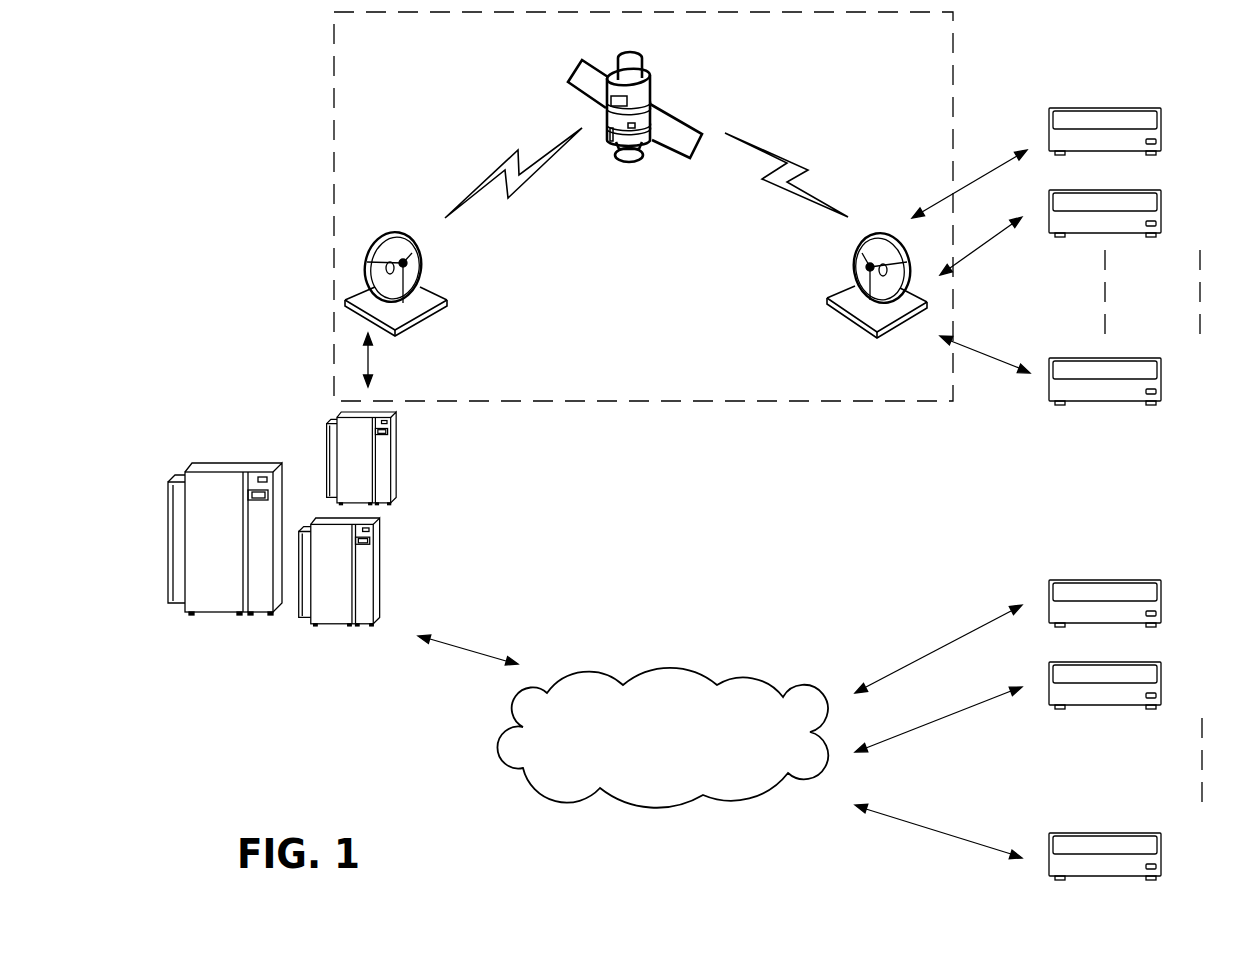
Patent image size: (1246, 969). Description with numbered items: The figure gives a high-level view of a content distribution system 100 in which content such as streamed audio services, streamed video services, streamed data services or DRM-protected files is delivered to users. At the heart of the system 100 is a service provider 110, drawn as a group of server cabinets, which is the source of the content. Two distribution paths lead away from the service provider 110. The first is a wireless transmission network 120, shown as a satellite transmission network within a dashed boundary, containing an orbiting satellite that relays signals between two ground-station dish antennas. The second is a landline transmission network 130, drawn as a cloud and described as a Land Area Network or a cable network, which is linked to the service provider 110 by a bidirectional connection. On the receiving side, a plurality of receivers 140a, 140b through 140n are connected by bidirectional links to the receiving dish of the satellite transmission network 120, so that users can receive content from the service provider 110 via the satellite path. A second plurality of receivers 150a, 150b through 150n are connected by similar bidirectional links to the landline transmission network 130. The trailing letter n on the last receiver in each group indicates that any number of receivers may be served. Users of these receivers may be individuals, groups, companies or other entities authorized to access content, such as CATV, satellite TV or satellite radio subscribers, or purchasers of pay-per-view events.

The content distribution system 100 is at (700, 521).
The service provider 110 is at (283, 687).
The wireless transmission network 120 is at (893, 48).
The landline transmission network 130 is at (649, 764).
The receiver 140a is at (1228, 142).
The receiver 140b is at (1228, 222).
The receiver 140n is at (1228, 391).
The receiver 150a is at (1228, 612).
The receiver 150b is at (1228, 692).
The receiver 150n is at (1228, 862).